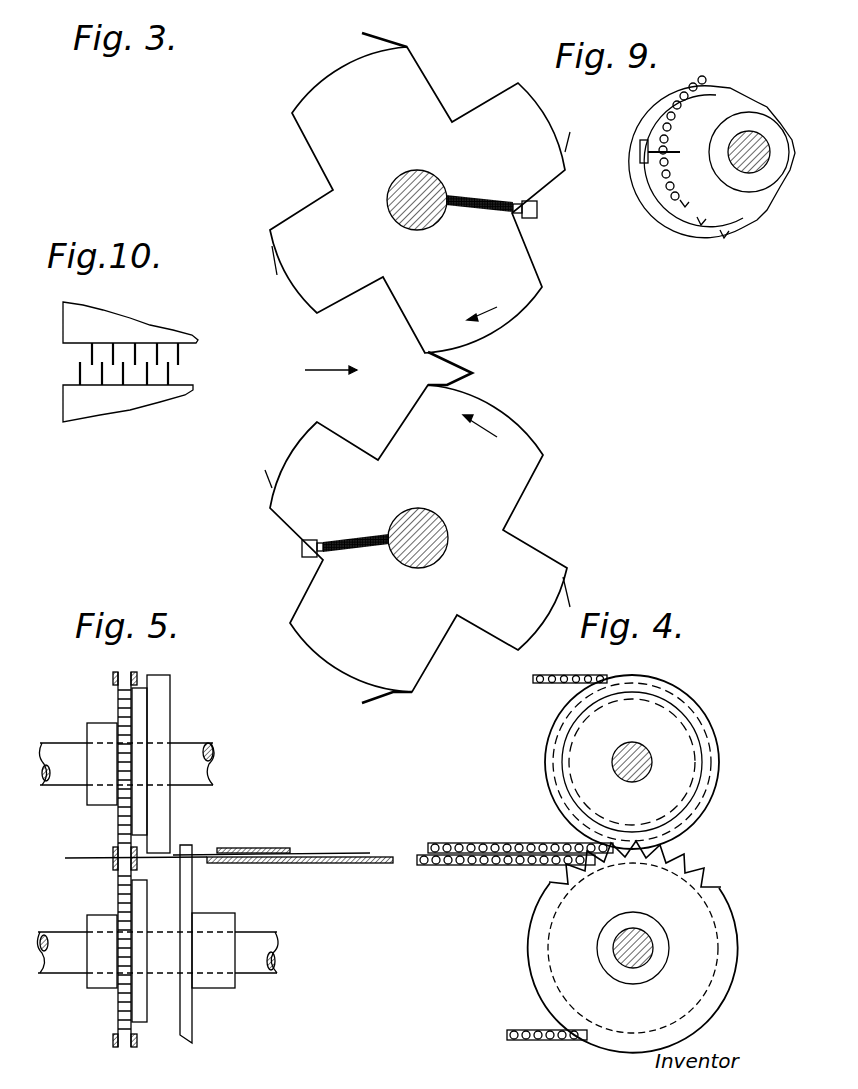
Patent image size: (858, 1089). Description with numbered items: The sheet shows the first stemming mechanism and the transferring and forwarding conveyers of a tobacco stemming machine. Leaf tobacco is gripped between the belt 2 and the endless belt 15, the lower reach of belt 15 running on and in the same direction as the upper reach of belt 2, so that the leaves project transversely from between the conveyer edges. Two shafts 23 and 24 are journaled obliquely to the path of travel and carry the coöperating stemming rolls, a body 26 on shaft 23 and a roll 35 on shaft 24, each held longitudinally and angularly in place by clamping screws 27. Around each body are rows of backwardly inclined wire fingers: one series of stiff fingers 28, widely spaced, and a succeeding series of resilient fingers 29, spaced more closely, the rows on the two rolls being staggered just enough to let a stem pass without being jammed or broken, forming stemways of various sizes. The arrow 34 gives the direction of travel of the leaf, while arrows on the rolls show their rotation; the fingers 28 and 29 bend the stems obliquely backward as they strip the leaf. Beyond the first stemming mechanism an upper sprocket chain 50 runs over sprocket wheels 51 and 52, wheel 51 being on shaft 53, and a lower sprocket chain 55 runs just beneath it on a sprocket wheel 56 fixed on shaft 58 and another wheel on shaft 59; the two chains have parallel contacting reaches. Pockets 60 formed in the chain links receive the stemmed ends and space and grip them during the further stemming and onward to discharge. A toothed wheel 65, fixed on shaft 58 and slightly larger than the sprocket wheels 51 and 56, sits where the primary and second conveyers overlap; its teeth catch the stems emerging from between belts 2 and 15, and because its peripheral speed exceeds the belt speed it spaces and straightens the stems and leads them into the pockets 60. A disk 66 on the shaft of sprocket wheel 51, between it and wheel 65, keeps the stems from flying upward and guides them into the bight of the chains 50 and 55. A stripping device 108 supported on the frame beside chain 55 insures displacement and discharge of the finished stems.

In FIG. 5, the belt 2 is at (303, 865).
In FIG. 5, the endless belt 15 is at (273, 848).
In FIG. 3, the shaft 23 is at (395, 184).
In FIG. 3, the shaft 24 is at (418, 508).
In FIG. 3, the body 26 is at (480, 105).
In FIG. 10, the body 26 is at (158, 332).
In FIG. 3, the clamping screws 27 is at (538, 209).
In FIG. 3, the stiff fingers 28 is at (373, 37).
In FIG. 10, the stiff fingers 28 is at (170, 375).
In FIG. 3, the resilient fingers 29 is at (573, 134).
In FIG. 3, the arrow 34 is at (345, 368).
In FIG. 3, the stemming roll 35 is at (510, 511).
In FIG. 10, the stemming roll 35 is at (153, 396).
In FIG. 5, the upper sprocket chain 50 is at (113, 853).
In FIG. 4, the upper sprocket chain 50 is at (517, 845).
In FIG. 5, the sprocket wheel 51 is at (120, 816).
In FIG. 4, the sprocket wheel 51 is at (543, 773).
In FIG. 9, the sprocket wheel 52 is at (695, 207).
In FIG. 5, the shaft 53 is at (190, 742).
In FIG. 4, the shaft 53 is at (625, 745).
In FIG. 5, the sprocket chain 55 is at (113, 866).
In FIG. 4, the sprocket chain 55 is at (525, 864).
In FIG. 5, the sprocket wheel 56 is at (122, 899).
In FIG. 4, the sprocket wheel 56 is at (543, 942).
In FIG. 5, the shaft 58 is at (253, 940).
In FIG. 4, the shaft 58 is at (633, 928).
In FIG. 9, the shaft 59 is at (755, 170).
In FIG. 5, the pockets 60 is at (163, 713).
In FIG. 4, the pockets 60 is at (478, 866).
In FIG. 5, the toothed wheel 65 is at (193, 894).
In FIG. 4, the toothed wheel 65 is at (698, 867).
In FIG. 4, the disk 66 is at (548, 738).
In FIG. 9, the stripping device 108 is at (653, 163).